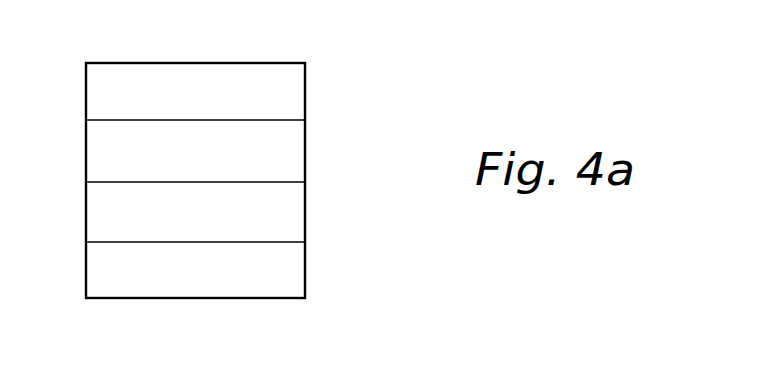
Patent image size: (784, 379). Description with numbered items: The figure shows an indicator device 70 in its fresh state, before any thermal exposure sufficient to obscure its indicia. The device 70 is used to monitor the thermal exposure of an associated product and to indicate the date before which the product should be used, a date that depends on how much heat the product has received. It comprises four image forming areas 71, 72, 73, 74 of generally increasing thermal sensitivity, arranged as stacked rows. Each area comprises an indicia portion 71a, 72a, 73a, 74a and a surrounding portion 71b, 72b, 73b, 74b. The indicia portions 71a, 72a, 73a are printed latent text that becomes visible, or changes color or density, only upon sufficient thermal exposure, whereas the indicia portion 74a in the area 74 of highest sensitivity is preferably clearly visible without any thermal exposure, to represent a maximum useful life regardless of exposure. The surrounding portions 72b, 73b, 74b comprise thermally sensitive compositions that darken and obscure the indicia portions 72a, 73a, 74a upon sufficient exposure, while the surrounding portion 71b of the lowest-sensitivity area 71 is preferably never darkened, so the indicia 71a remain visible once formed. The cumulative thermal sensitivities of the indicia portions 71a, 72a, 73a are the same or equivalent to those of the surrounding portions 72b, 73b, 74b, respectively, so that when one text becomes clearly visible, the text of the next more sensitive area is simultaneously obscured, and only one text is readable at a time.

The indicator device 70 is at (333, 100).
The image forming area 71 is at (176, 64).
The indicia portion 71a is at (220, 92).
The surrounding portion 71b is at (277, 88).
The image forming area 72 is at (212, 157).
The indicia portion 72a is at (258, 148).
The surrounding portion 72b is at (287, 170).
The image forming area 73 is at (215, 218).
The indicia portion 73a is at (250, 213).
The surrounding portion 73b is at (285, 228).
The image forming area 74 is at (209, 295).
The indicia portion 74a is at (250, 275).
The surrounding portion 74b is at (288, 288).